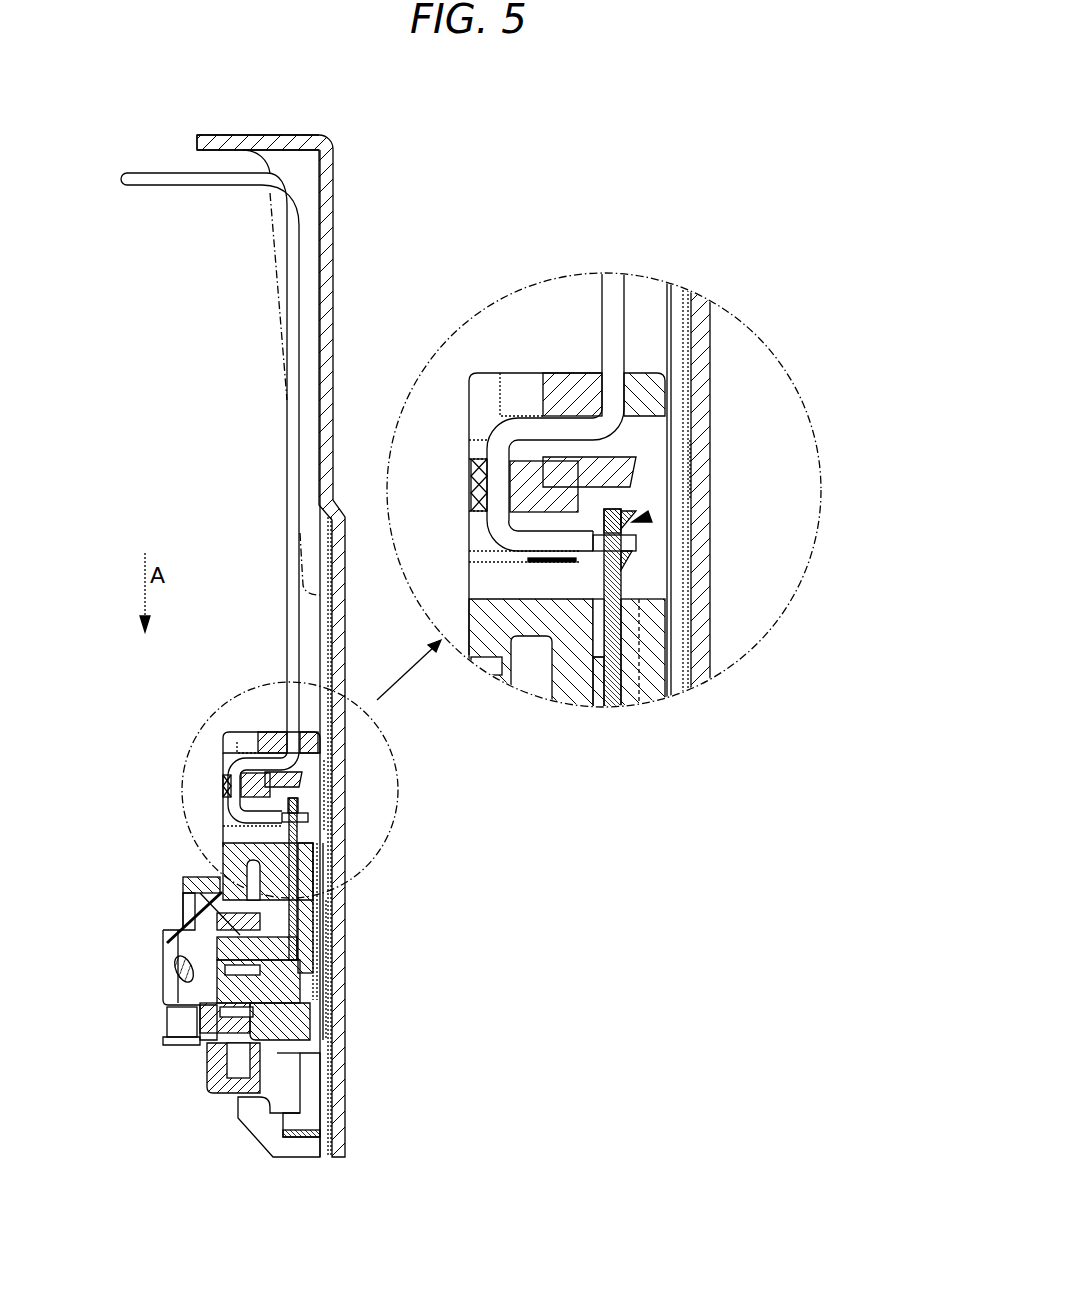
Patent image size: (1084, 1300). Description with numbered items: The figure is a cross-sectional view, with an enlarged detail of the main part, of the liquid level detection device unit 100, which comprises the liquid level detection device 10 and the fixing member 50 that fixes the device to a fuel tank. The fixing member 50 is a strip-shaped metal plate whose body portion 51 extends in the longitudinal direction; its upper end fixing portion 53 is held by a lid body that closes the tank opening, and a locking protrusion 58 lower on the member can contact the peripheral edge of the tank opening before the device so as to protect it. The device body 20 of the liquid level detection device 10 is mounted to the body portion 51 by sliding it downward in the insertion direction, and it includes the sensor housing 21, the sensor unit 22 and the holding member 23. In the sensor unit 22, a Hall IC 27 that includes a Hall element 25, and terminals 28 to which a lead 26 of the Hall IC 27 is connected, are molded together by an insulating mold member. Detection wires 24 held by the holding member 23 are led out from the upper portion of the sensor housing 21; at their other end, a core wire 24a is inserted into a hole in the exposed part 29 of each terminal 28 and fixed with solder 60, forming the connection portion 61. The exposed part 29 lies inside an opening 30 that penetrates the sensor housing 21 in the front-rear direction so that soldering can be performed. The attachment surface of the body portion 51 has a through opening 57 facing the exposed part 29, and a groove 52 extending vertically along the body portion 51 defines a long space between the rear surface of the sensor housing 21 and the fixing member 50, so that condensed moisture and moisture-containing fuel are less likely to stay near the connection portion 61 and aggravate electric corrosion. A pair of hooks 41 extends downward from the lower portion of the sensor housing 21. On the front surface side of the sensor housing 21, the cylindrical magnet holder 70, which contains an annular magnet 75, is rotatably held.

The liquid level detection device 10 is at (166, 852).
The device body 20 is at (205, 1100).
The sensor housing 21 is at (228, 1097).
The sensor unit 22 is at (175, 1020).
The holding member 23 is at (252, 727).
The detection wire 24 is at (287, 612).
The core wire 24a is at (636, 548).
The Hall element 25 is at (334, 998).
The lead 26 is at (322, 952).
The Hall IC 27 is at (320, 915).
The terminal 28 is at (302, 893).
The exposed part 29 is at (300, 800).
The opening 30 is at (247, 845).
The hook 41 is at (300, 1148).
The fixing member 50 is at (341, 274).
The body portion 51 is at (320, 402).
The groove 52 is at (322, 660).
The upper end fixing portion 53 is at (283, 135).
The through opening 57 is at (338, 792).
The locking protrusion 58 is at (256, 1153).
The solder 60 is at (626, 562).
The connection portion 61 is at (644, 517).
The magnet holder 70 is at (158, 945).
The annular magnet 75 is at (190, 903).
The liquid level detection device unit 100 is at (198, 494).